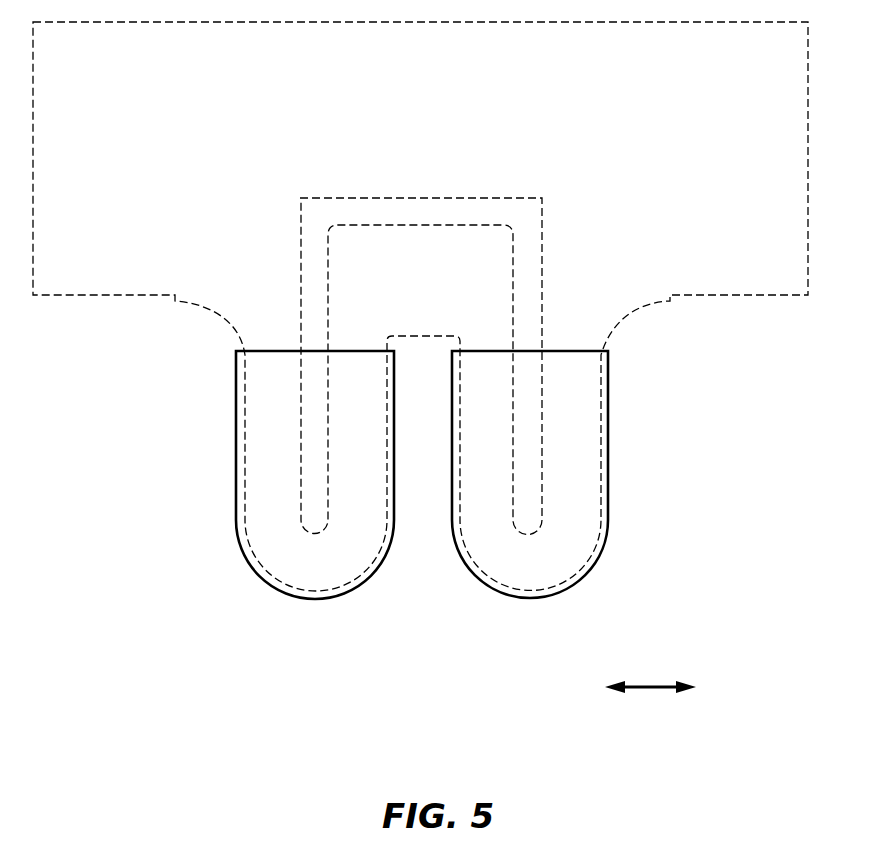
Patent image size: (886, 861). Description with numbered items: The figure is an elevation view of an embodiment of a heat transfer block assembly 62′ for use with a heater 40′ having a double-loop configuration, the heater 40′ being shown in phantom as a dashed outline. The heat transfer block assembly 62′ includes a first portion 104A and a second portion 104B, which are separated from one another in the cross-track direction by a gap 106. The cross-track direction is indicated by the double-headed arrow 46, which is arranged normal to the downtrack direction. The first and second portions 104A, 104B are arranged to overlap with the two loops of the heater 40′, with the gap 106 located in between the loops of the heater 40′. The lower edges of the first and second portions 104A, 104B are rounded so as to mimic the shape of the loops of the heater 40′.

The heater 40′ is at (622, 341).
The heat transfer block assembly 62′ is at (712, 480).
The first portion 104A is at (310, 599).
The second portion 104B is at (545, 599).
The gap 106 is at (451, 677).
The cross-track direction arrow 46 is at (645, 690).